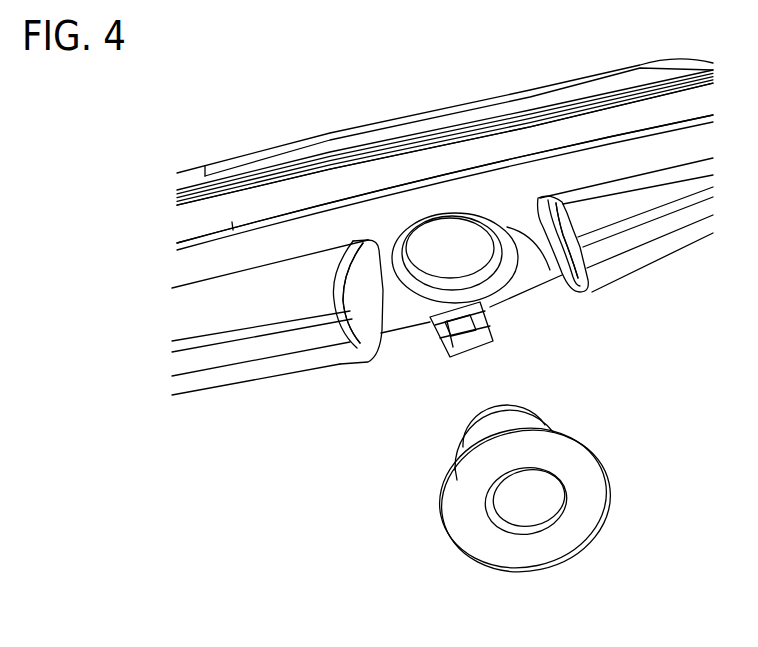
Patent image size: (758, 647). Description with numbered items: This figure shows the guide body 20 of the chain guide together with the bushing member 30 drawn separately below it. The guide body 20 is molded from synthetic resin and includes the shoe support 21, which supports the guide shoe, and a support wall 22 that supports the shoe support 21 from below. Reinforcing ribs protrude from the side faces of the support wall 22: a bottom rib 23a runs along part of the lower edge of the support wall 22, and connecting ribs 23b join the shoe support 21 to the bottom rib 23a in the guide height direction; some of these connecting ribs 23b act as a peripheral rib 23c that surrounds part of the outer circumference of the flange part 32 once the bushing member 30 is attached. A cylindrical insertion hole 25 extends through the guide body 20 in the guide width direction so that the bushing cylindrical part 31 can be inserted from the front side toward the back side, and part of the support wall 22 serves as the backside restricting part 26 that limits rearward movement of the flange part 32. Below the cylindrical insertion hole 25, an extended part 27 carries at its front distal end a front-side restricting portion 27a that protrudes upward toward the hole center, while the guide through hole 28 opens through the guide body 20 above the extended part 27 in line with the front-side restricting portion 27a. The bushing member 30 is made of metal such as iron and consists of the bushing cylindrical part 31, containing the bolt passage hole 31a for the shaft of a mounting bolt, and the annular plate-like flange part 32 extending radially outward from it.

The guide body 20 is at (658, 141).
The shoe support 21 is at (342, 240).
The support wall 22 is at (281, 293).
The backside restricting part 26 is at (518, 232).
The bottom rib 23a is at (260, 372).
The connecting rib 23b is at (370, 300).
The peripheral rib 23c is at (494, 329).
The cylindrical insertion hole 25 is at (438, 232).
The extended part 27 is at (480, 307).
The front-side restricting portion 27a is at (494, 342).
The guide through hole 28 is at (452, 313).
The bushing member 30 is at (444, 545).
The bushing cylindrical part 31 is at (477, 442).
The bolt passage hole 31a is at (527, 503).
The flange part 32 is at (592, 490).